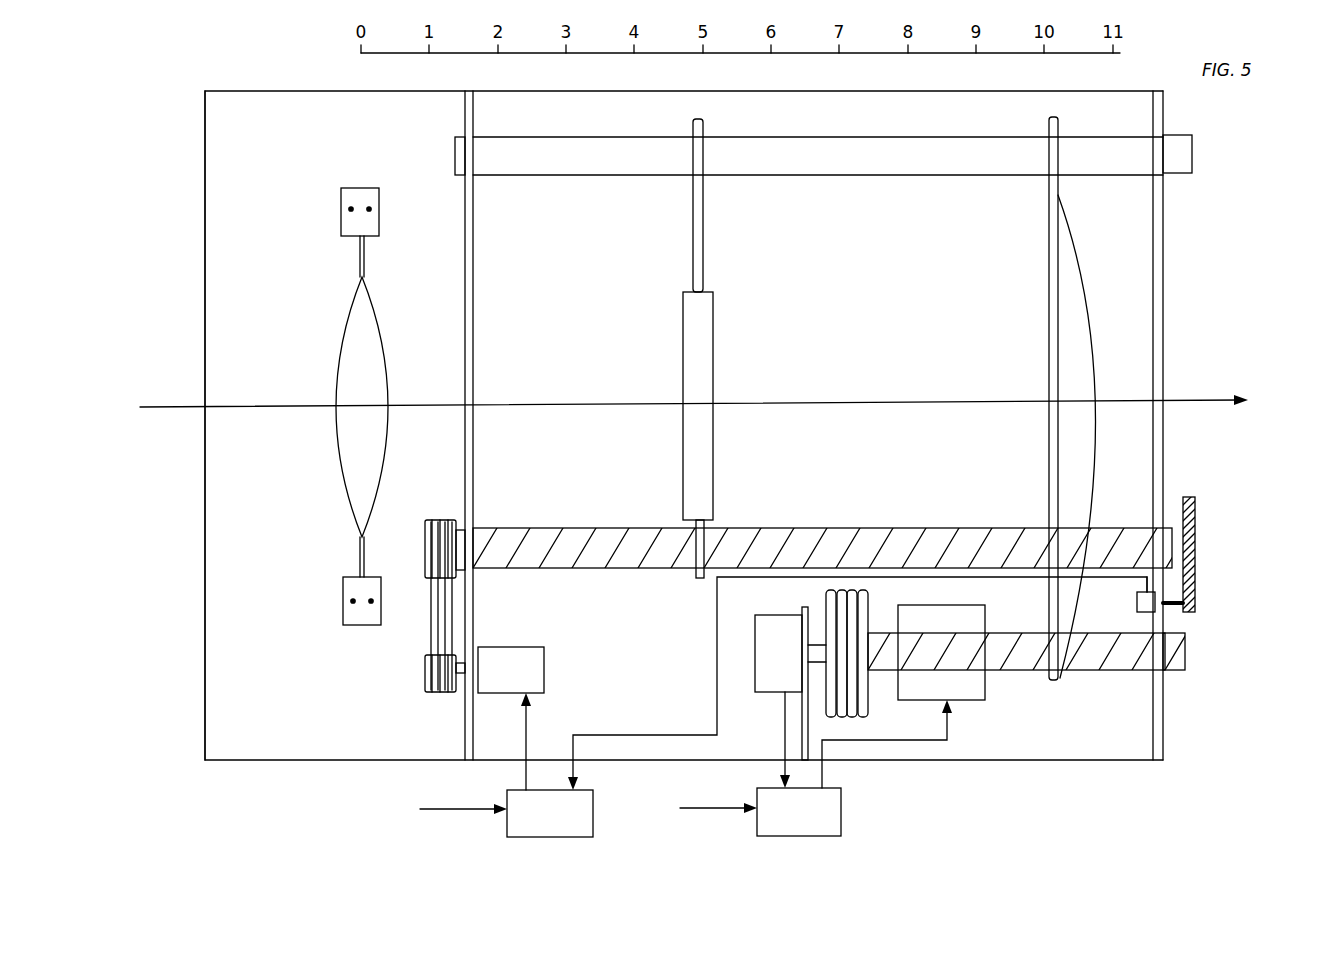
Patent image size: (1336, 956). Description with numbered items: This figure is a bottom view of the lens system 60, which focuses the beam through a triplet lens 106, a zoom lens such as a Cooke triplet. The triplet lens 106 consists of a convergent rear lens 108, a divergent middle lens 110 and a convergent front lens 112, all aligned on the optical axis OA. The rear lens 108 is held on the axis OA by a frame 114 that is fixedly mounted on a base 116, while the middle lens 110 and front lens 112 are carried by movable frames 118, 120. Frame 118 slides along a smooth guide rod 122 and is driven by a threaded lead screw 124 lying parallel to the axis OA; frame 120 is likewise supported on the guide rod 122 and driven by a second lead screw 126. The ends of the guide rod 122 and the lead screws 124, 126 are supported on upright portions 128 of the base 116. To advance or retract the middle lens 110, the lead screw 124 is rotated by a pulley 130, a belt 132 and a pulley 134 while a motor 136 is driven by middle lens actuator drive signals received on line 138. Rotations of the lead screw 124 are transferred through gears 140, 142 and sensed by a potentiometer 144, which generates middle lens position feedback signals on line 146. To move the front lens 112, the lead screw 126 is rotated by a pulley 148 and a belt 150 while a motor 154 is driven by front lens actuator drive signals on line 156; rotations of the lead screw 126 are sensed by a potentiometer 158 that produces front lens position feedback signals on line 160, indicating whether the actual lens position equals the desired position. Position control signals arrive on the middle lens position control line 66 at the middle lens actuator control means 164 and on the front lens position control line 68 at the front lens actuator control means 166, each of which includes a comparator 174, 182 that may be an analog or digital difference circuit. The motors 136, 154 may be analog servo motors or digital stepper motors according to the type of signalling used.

The lens system 60 is at (1187, 254).
The middle lens position control line 66 is at (467, 810).
The front lens position control line 68 is at (710, 810).
The triplet lens 106 is at (205, 314).
The convergent rear lens 108 is at (375, 348).
The divergent middle lens 110 is at (705, 352).
The convergent front lens 112 is at (1083, 324).
The frame 114 is at (365, 252).
The base 116 is at (232, 567).
The movable frame 118 is at (705, 258).
The movable frame 120 is at (1050, 192).
The guide rod 122 is at (800, 173).
The lead screw 124 is at (582, 566).
The lead screw 126 is at (1095, 657).
The upright portions 128 is at (465, 212).
The pulley 130 is at (428, 540).
The belt 132 is at (434, 636).
The pulley 134 is at (430, 690).
The motor 136 is at (534, 668).
The line 138 is at (526, 777).
The gear 140 is at (1197, 552).
The gear 142 is at (1197, 606).
The potentiometer 144 is at (1115, 592).
The line 146 is at (573, 770).
The pulley 148 is at (826, 598).
The belt 150 is at (868, 596).
The motor 154 is at (975, 698).
The line 156 is at (823, 770).
The potentiometer 158 is at (778, 680).
The line 160 is at (782, 768).
The middle lens actuator control means 164 is at (365, 793).
The front lens actuator control means 166 is at (984, 792).
The comparator 174 is at (590, 828).
The comparator 182 is at (825, 820).
The optical axis OA is at (1185, 400).